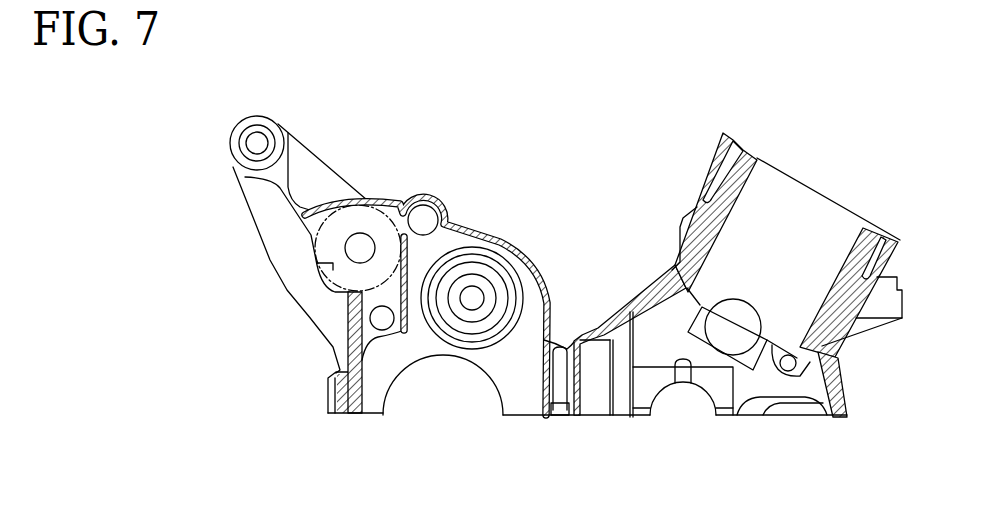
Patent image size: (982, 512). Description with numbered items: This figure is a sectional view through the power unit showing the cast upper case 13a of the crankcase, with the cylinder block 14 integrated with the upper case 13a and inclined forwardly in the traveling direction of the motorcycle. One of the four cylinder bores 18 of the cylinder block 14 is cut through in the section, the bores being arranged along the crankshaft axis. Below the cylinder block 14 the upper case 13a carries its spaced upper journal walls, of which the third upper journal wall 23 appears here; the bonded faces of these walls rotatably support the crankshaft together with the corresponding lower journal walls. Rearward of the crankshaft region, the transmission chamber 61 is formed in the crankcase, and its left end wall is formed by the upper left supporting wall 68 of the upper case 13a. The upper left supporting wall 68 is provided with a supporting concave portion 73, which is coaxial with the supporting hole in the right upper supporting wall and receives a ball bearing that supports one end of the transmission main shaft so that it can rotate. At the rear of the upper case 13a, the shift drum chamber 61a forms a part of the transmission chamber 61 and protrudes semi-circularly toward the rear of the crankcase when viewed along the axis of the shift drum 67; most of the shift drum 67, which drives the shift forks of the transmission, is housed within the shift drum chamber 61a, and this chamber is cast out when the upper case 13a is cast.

The cylinder block 14 is at (697, 217).
The cylinder bore 18 is at (842, 268).
The upper case 13a is at (605, 327).
The third upper journal wall 23 is at (727, 417).
The transmission chamber 61 is at (513, 247).
The shift drum chamber 61a is at (333, 277).
The shift drum 67 is at (401, 212).
The upper left supporting wall 68 is at (372, 400).
The supporting concave portion 73 is at (467, 270).